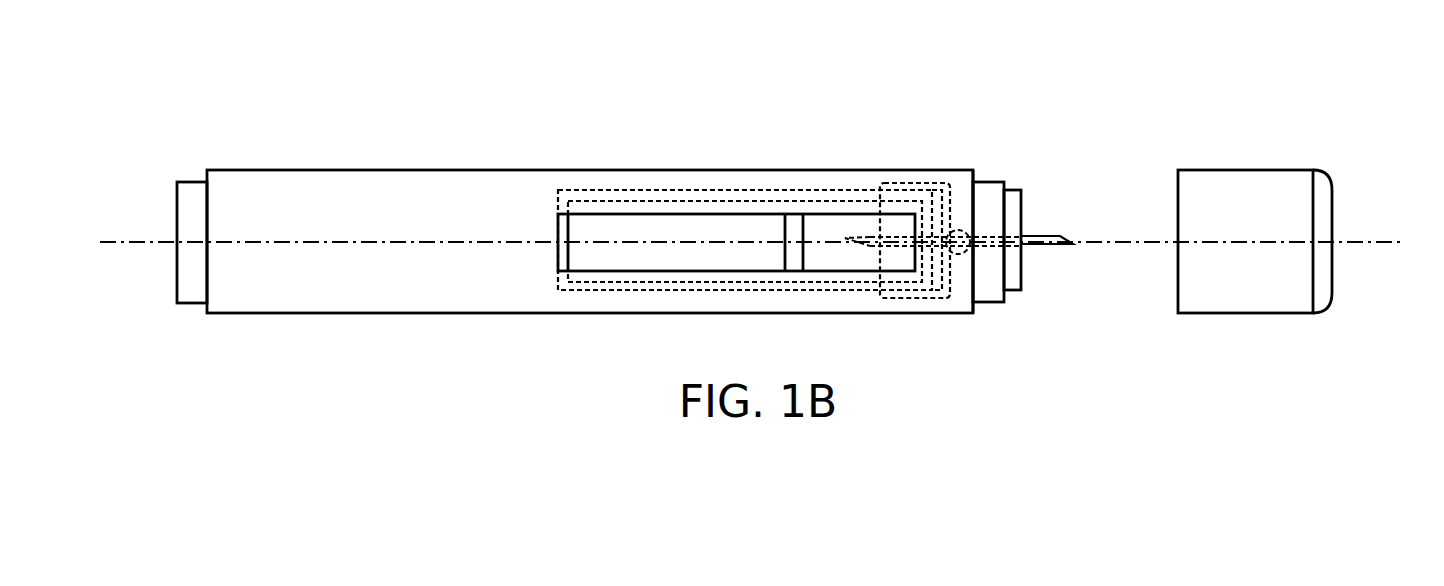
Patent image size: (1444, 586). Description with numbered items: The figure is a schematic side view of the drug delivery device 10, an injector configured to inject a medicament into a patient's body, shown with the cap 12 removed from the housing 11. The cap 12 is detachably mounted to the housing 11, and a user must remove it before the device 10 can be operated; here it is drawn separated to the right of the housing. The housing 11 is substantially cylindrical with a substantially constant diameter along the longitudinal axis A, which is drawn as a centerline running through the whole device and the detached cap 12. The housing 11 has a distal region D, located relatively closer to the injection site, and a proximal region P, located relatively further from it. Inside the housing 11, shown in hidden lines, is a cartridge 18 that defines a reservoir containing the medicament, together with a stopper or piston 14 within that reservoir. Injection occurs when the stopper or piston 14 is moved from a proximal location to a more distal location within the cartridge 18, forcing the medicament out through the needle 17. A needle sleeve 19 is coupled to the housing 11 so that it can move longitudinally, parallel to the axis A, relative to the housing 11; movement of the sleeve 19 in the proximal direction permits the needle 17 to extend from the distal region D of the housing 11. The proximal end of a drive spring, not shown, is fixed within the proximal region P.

The drug delivery device 10 is at (1210, 60).
The housing 11 is at (825, 180).
The cap 12 is at (1242, 188).
The stopper or piston 14 is at (795, 263).
The needle 17 is at (1043, 235).
The cartridge 18 is at (602, 290).
The needle sleeve 19 is at (988, 192).
The proximal region P is at (222, 300).
The distal region D is at (953, 302).
The longitudinal axis A is at (751, 243).